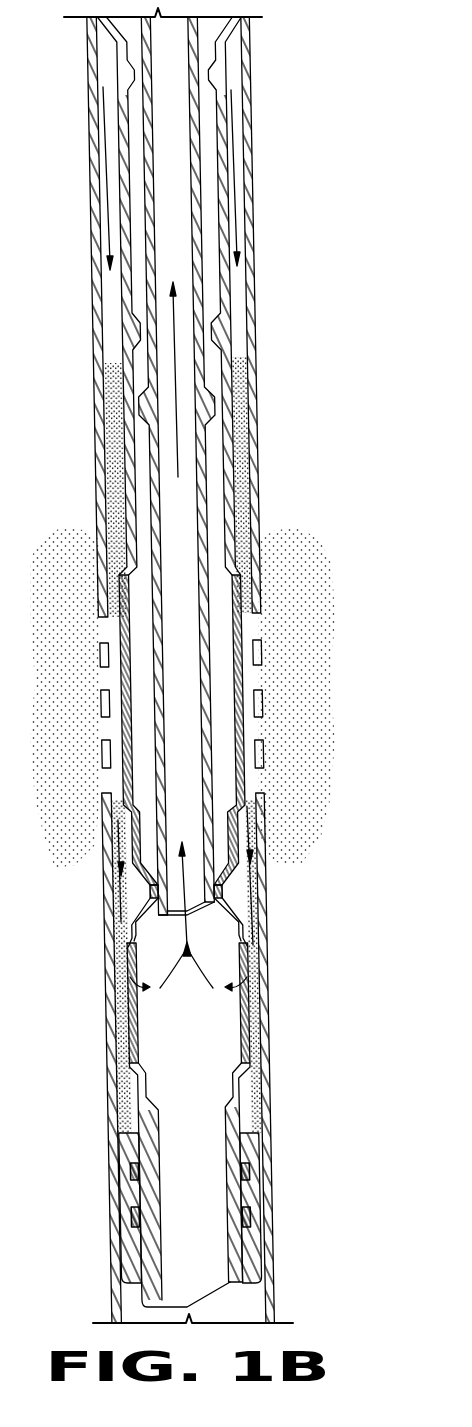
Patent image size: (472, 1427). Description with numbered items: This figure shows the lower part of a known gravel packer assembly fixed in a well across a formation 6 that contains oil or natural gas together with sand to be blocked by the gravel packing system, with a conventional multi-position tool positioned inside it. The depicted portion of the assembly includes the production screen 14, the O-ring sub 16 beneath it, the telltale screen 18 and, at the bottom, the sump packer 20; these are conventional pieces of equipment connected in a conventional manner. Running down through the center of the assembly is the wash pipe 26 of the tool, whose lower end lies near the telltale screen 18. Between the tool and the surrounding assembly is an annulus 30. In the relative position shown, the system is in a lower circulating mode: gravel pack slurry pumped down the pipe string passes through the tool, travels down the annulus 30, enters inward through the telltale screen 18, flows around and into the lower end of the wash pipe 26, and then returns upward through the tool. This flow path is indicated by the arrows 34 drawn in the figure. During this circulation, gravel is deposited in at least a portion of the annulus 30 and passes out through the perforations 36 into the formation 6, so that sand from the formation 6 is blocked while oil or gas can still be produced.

The formation 6 is at (297, 567).
The production screen 14 is at (250, 625).
The O-ring sub 16 is at (250, 893).
The telltale screen 18 is at (260, 1004).
The sump packer 20 is at (270, 1134).
The wash pipe 26 is at (197, 113).
The annulus 30 is at (242, 318).
The arrows 34 is at (107, 152).
The perforations 36 is at (270, 778).